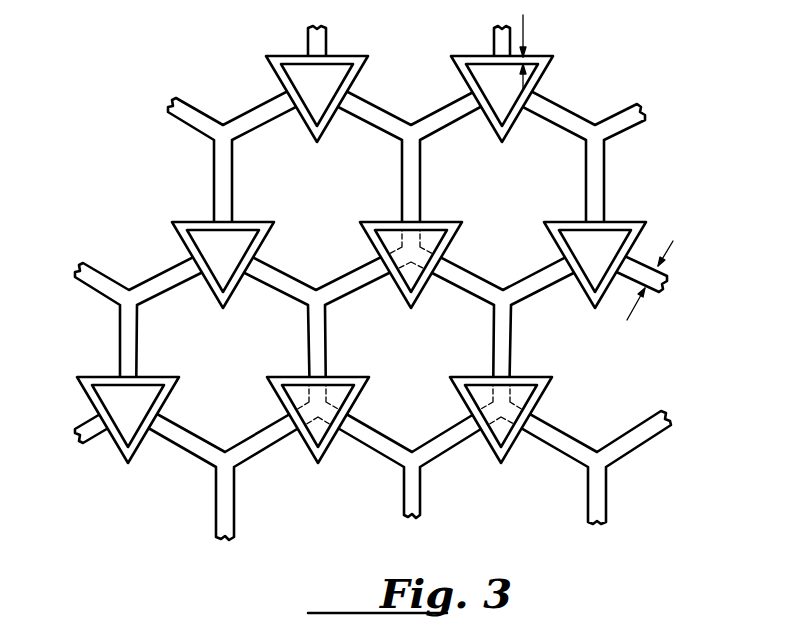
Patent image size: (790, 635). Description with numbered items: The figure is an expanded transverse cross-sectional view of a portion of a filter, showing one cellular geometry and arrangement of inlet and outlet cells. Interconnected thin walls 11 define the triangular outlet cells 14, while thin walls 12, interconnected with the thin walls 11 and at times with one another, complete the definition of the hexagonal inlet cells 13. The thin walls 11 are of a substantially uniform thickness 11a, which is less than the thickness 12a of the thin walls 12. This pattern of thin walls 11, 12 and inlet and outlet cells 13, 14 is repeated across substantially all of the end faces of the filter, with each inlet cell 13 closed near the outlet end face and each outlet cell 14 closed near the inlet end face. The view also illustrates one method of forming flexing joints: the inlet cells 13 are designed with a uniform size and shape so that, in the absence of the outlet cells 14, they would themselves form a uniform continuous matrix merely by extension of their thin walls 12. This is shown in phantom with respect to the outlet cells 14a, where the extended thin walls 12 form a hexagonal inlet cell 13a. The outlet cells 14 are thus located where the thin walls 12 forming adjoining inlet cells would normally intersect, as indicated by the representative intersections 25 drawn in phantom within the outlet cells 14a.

The thin walls 11 is at (478, 56).
The wall thickness 11a is at (525, 86).
The thin walls 12 is at (573, 118).
The wall thickness 12a is at (627, 320).
The inlet cells 13 is at (305, 205).
The hexagonal inlet cell 13a is at (398, 345).
The outlet cells 14 is at (211, 258).
The outlet cells 14a is at (427, 235).
The intersections 25 is at (372, 239).